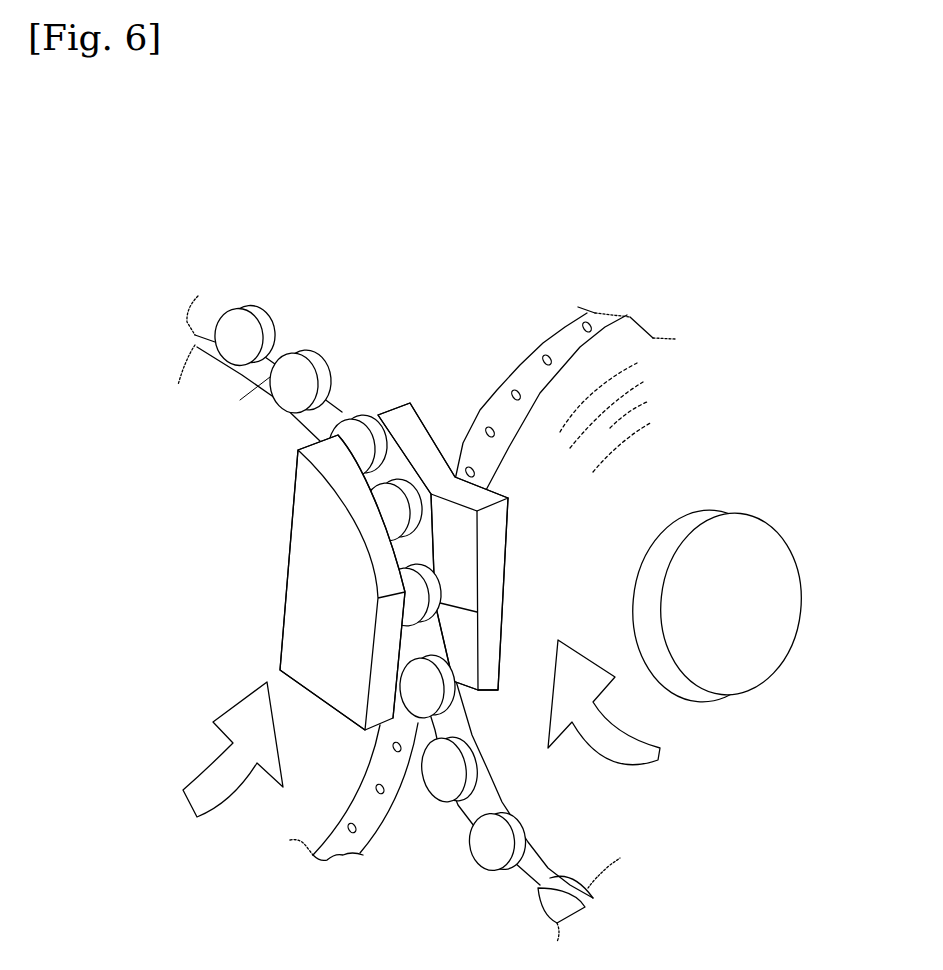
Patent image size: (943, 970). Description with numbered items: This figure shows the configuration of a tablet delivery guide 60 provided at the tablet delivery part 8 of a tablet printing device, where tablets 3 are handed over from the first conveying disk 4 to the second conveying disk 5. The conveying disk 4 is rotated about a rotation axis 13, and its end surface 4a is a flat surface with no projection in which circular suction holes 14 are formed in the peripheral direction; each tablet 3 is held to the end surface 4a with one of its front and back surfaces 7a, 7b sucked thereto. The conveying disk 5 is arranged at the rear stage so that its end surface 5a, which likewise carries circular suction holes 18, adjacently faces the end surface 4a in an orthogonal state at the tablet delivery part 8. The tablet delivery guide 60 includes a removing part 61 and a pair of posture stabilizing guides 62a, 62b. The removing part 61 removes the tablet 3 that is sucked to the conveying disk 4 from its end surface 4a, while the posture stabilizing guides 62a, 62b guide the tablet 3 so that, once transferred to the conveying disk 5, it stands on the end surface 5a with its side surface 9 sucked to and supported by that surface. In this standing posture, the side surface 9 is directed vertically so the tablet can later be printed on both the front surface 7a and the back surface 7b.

The tablet 3 is at (445, 786).
The conveying disk 4 is at (565, 845).
The end surface 4a is at (565, 340).
The conveying disk 5 is at (275, 352).
The end surface 5a is at (338, 420).
The front surface 7a is at (329, 353).
The back surface 7b is at (292, 390).
The tablet delivery part 8 is at (405, 723).
The side surface 9 is at (373, 425).
The rotation axis 13 is at (760, 650).
The suction holes 14 is at (565, 346).
The suction holes 18 is at (382, 795).
The tablet delivery guide 60 is at (392, 531).
The removing part 61 is at (476, 660).
The posture stabilizing guide 62a is at (484, 597).
The posture stabilizing guide 62b is at (367, 522).